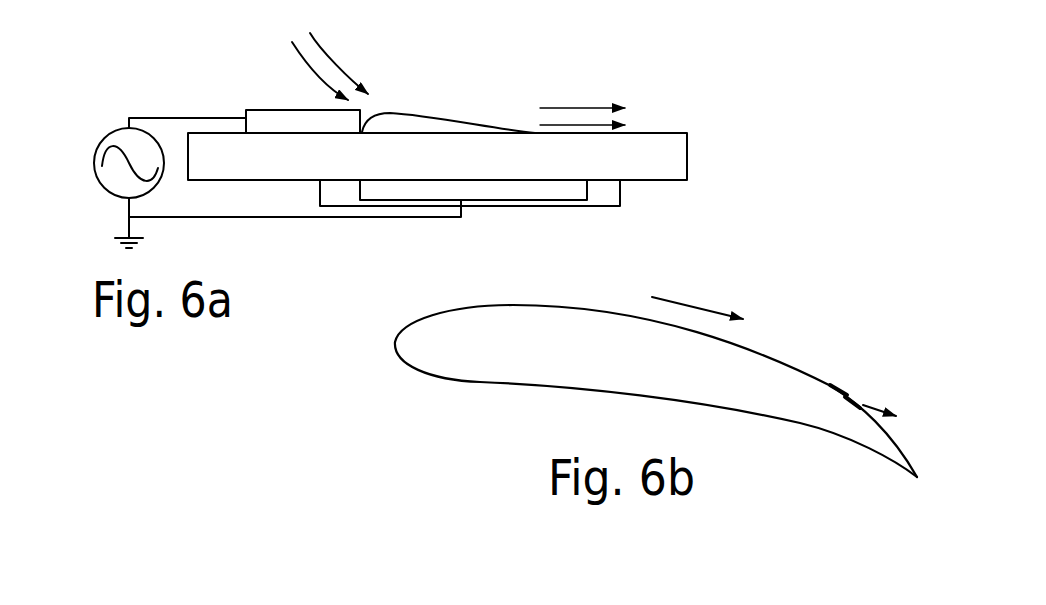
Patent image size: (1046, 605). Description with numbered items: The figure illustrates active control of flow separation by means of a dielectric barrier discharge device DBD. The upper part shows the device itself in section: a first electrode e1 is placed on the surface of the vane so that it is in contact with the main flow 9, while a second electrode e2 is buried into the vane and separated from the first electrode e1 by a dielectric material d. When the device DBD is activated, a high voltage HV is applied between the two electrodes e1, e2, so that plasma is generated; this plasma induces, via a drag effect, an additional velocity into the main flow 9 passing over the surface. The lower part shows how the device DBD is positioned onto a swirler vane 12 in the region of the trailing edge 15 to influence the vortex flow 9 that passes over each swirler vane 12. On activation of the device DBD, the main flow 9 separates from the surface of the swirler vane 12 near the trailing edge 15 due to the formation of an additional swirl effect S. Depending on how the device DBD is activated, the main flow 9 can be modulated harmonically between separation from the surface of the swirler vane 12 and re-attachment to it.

In FIG. 6A, the dielectric barrier discharge device DBD is at (186, 78).
In FIG. 6B, the dielectric barrier discharge device DBD is at (858, 381).
In FIG. 6A, the high voltage HV is at (110, 142).
In FIG. 6A, the first electrode e1 is at (267, 118).
In FIG. 6B, the first electrode e1 is at (835, 385).
In FIG. 6A, the second electrode e2 is at (507, 190).
In FIG. 6B, the second electrode e2 is at (845, 408).
In FIG. 6A, the dielectric material d is at (665, 160).
In FIG. 6A, the element plasma is at (493, 107).
In FIG. 6A, the main flow 9 is at (327, 62).
In FIG. 6B, the main flow 9 is at (693, 300).
In FIG. 6B, the swirler vane 12 is at (513, 387).
In FIG. 6B, the trailing edge 15 is at (918, 482).
In FIG. 6B, the additional swirl effect S is at (900, 426).